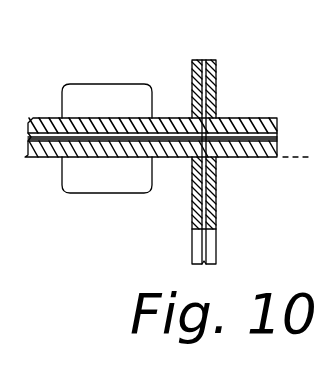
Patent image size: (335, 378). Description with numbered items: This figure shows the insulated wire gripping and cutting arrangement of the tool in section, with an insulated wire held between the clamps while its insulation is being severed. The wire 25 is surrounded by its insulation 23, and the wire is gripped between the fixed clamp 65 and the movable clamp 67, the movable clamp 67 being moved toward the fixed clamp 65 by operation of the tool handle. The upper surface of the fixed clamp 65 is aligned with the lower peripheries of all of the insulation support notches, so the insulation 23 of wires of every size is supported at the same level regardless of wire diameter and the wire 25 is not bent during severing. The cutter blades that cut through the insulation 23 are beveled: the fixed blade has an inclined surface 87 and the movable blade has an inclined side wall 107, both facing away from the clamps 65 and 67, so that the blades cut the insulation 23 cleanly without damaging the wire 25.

The insulation 23 is at (47, 124).
The wire 25 is at (57, 140).
The fixed clamp 65 is at (107, 180).
The movable clamp 67 is at (108, 94).
The inclined surface 87 is at (254, 120).
The inclined side wall 107 is at (214, 141).